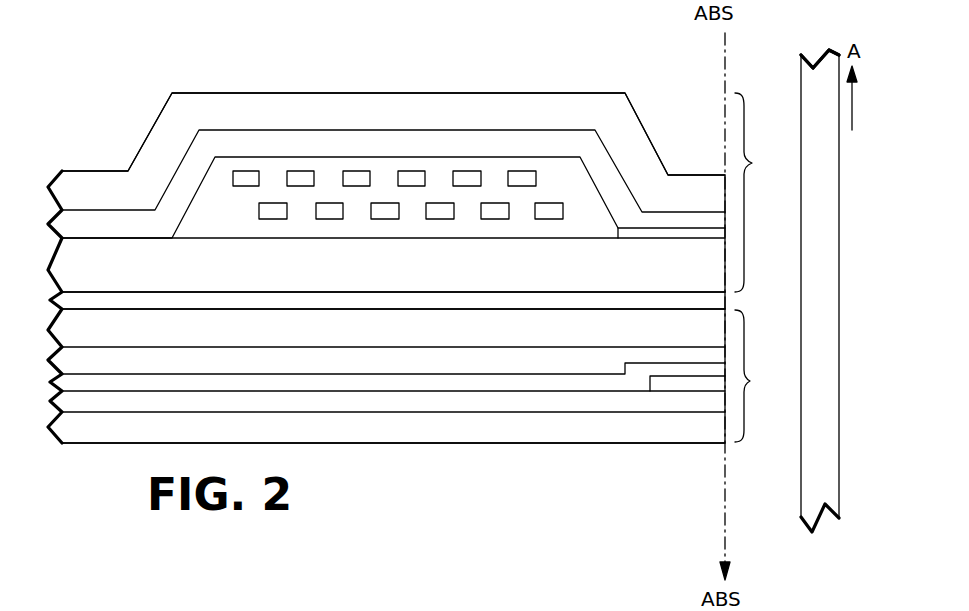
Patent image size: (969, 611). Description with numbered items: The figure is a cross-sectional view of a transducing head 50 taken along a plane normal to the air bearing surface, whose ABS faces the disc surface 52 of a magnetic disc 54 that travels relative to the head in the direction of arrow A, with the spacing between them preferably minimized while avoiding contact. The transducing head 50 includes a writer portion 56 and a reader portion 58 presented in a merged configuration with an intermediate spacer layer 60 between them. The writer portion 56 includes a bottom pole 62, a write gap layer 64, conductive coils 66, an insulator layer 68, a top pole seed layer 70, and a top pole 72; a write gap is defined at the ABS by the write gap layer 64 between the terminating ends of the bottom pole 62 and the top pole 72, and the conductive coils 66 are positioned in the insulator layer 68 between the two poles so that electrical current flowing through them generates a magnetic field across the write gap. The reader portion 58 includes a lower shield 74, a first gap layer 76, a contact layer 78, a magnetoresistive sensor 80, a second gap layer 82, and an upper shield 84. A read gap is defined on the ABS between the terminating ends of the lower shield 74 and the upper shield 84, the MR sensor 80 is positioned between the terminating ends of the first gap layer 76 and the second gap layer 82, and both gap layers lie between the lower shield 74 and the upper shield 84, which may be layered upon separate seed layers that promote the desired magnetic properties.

The transducing head 50 is at (96, 106).
The disc surface 52 is at (800, 80).
The magnetic disc 54 is at (823, 90).
The writer portion 56 is at (761, 192).
The reader portion 58 is at (758, 376).
The spacer layer 60 is at (710, 302).
The bottom pole 62 is at (350, 268).
The write gap layer 64 is at (715, 235).
The conductive coils 66 is at (298, 172).
The insulator layer 68 is at (601, 233).
The top pole seed layer 70 is at (577, 142).
The top pole 72 is at (643, 152).
The lower shield 74 is at (458, 432).
The first gap layer 76 is at (601, 400).
The contact layer 78 is at (680, 372).
The magnetoresistive sensor 80 is at (662, 385).
The second gap layer 82 is at (536, 367).
The upper shield 84 is at (400, 333).